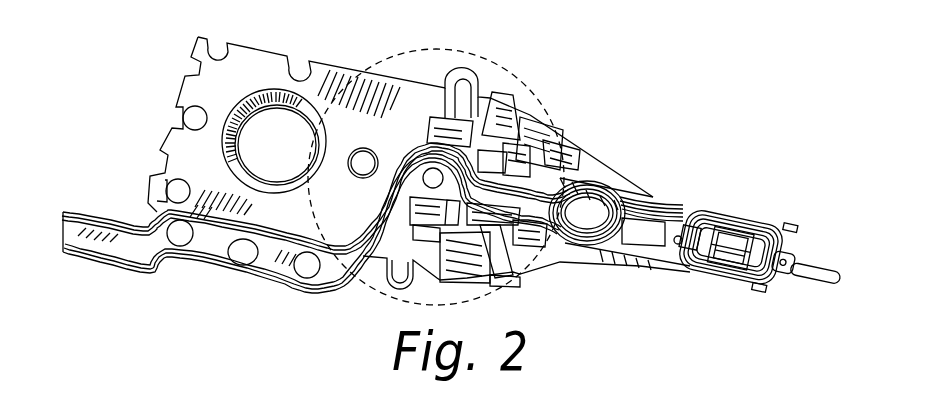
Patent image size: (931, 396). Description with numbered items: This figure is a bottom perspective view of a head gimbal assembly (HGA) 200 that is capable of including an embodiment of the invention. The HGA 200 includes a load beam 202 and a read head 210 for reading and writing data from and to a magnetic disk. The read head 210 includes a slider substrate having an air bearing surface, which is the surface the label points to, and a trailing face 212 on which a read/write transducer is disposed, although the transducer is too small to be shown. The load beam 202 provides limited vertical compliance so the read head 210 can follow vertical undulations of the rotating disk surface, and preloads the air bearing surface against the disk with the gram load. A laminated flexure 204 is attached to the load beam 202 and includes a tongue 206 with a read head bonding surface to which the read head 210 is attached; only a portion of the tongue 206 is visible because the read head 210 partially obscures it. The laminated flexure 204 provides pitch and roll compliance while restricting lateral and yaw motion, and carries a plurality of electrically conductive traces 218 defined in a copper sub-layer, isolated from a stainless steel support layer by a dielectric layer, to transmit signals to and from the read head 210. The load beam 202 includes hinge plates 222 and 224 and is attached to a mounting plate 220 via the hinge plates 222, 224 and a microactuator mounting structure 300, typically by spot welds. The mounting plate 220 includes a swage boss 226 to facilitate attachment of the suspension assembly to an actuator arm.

The head gimbal assembly 200 is at (612, 88).
The load beam 202 is at (597, 165).
The laminated flexure 204 is at (637, 195).
The tongue 206 is at (777, 270).
The read head 210 is at (737, 240).
The trailing face 212 is at (780, 233).
The electrically conductive traces 218 is at (227, 223).
The mounting plate 220 is at (297, 70).
The hinge plate 222 is at (545, 130).
The hinge plate 224 is at (510, 262).
The swage boss 226 is at (292, 100).
The microactuator mounting structure 300 is at (398, 137).